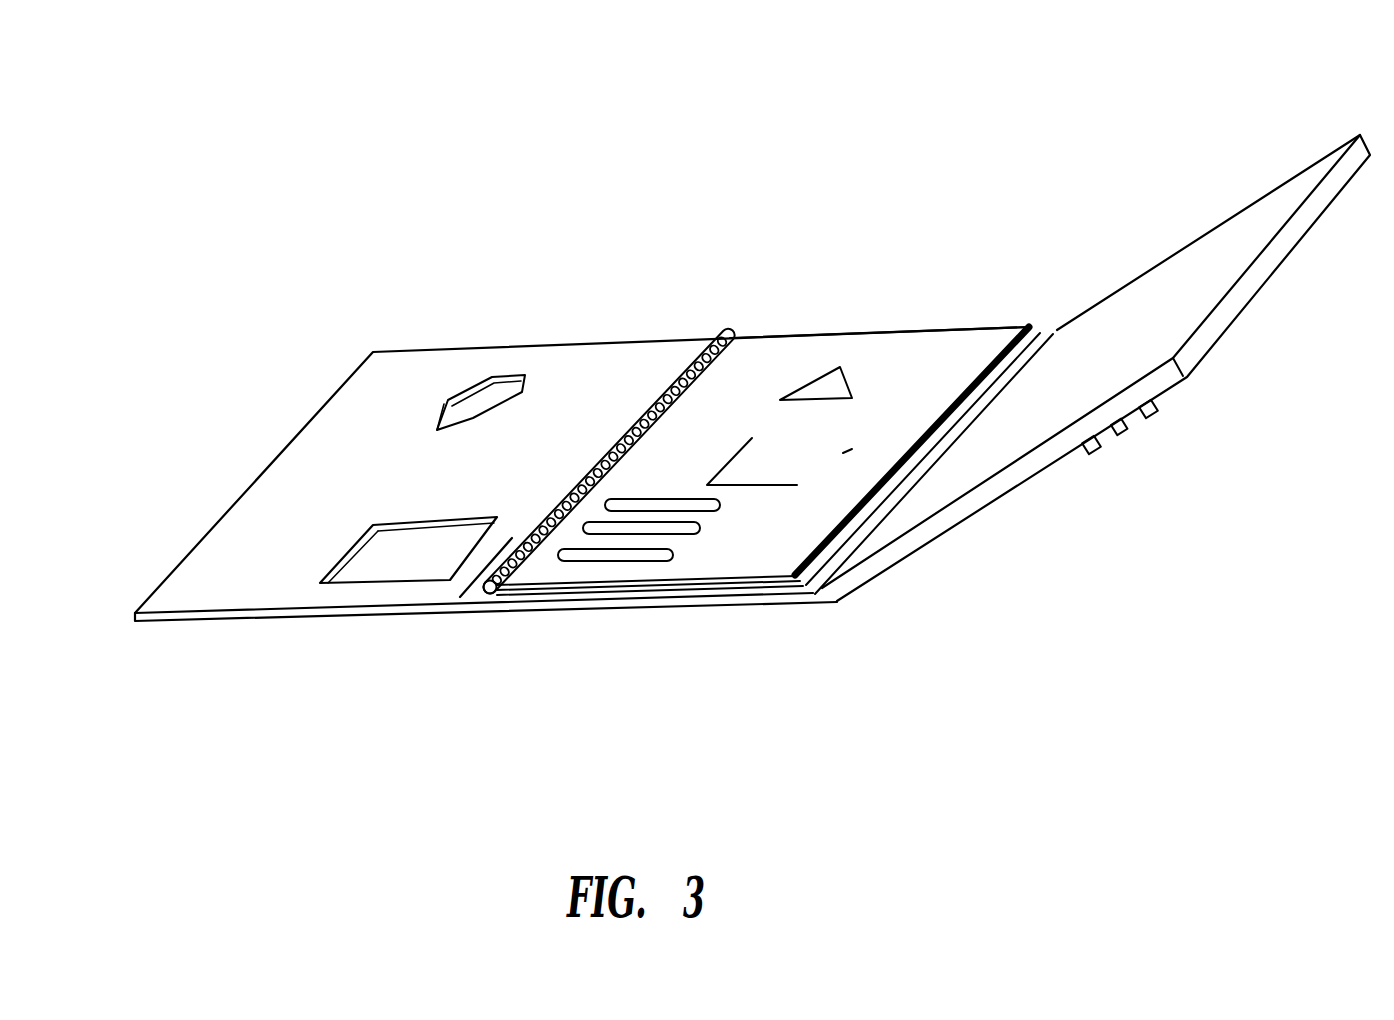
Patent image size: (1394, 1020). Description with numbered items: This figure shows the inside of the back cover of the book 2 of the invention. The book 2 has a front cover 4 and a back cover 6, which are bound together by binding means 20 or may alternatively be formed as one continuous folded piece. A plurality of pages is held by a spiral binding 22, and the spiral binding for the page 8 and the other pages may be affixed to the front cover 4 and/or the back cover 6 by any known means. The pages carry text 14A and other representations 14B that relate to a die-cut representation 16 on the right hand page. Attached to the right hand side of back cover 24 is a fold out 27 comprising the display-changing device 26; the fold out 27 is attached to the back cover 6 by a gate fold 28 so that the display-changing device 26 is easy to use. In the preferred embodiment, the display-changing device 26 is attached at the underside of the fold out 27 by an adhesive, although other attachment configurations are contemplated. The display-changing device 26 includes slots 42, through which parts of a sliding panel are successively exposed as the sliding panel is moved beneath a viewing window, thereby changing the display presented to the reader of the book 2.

The book 2 is at (353, 134).
The front cover 4 is at (488, 348).
The back cover 6 is at (618, 609).
The page 8 is at (684, 590).
The text 14A is at (843, 453).
The representation 14B is at (752, 438).
The die-cut representation 16 is at (840, 367).
The binding means 20 is at (485, 600).
The spiral binding 22 is at (730, 330).
The right hand side of back cover 24 is at (1048, 330).
The display-changing device 26 is at (1240, 293).
The fold out 27 is at (1075, 387).
The gate fold 28 is at (1052, 332).
The slots 42 is at (703, 528).